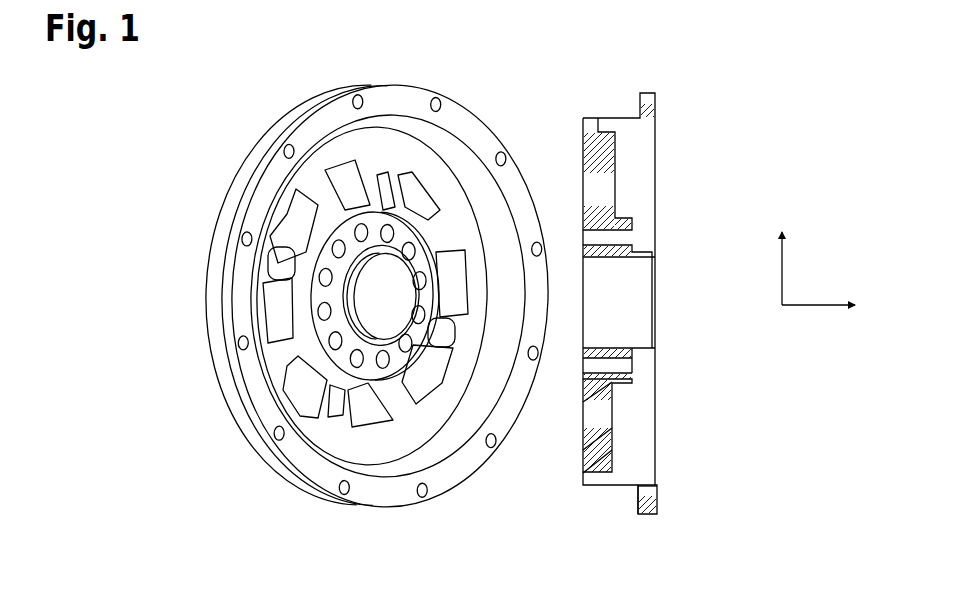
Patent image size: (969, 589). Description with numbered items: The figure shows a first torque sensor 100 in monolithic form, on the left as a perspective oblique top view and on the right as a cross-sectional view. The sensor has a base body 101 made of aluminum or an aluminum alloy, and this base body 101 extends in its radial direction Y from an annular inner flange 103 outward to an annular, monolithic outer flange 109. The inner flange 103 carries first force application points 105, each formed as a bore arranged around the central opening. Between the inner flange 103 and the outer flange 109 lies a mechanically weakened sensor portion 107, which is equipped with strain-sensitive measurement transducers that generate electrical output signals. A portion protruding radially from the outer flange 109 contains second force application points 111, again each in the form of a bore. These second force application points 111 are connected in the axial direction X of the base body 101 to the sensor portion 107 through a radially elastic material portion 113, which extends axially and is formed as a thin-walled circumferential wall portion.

The first torque sensor 100 is at (752, 88).
The base body 101 is at (584, 120).
The annular inner flange 103 is at (656, 350).
The first force application points 105 is at (634, 372).
The mechanically weakened sensor portion 107 is at (617, 416).
The annular, monolithic outer flange 109 is at (617, 453).
The second force application points 111 is at (657, 502).
The radially elastic material portion 113 is at (620, 487).